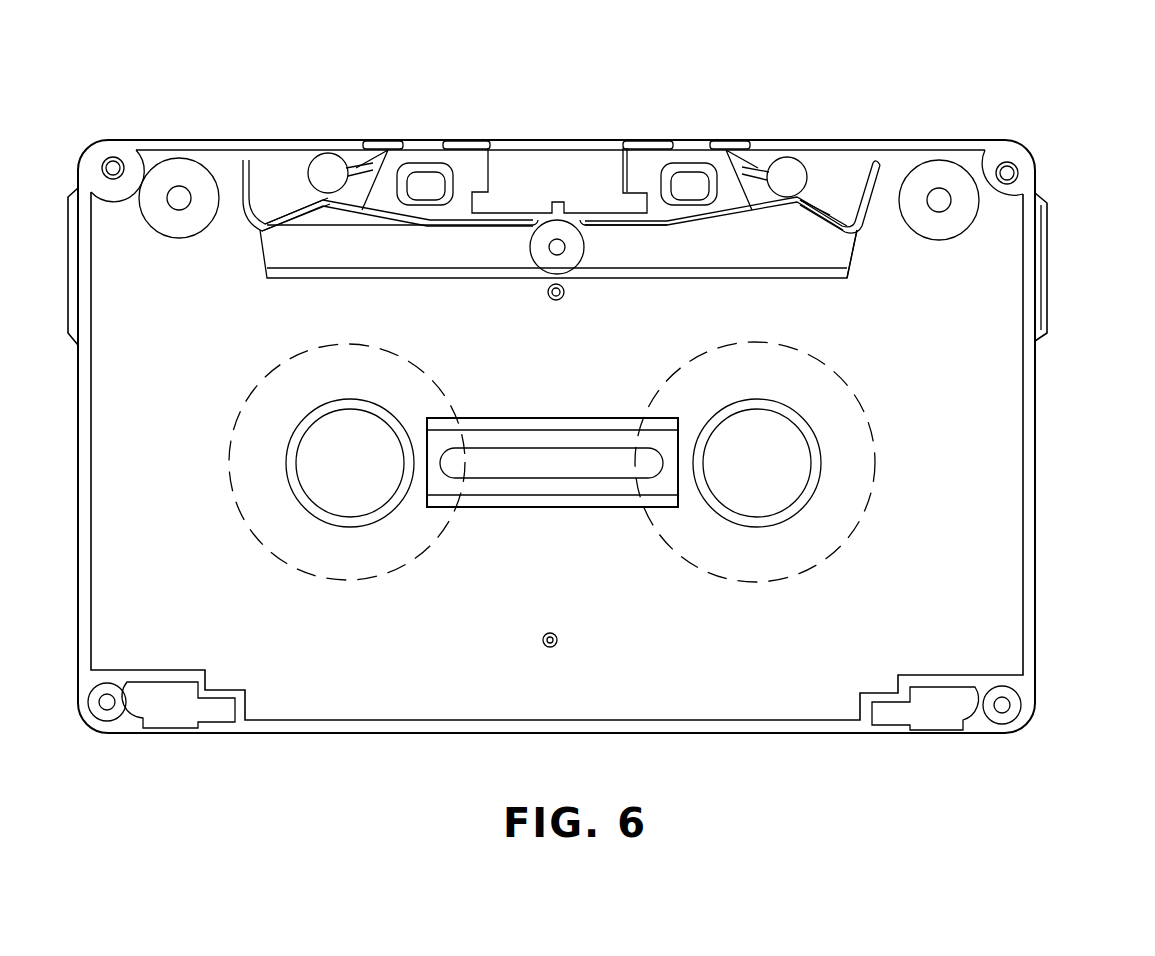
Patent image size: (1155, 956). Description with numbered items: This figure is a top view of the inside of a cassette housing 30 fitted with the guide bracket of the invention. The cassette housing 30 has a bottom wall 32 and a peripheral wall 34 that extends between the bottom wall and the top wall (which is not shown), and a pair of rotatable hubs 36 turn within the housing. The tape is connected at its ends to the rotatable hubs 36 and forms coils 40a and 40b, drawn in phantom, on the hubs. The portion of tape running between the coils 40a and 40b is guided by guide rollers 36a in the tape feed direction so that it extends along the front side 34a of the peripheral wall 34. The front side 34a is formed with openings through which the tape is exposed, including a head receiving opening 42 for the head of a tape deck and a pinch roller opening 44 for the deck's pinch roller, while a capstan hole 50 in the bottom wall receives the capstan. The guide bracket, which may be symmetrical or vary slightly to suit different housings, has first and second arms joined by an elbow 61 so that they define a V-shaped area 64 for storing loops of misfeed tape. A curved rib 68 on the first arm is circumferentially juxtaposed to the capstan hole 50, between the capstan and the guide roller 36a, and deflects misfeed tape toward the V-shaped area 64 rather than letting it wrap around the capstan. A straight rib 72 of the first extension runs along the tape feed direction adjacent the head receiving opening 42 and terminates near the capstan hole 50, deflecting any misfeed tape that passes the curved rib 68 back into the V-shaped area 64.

The cassette housing 30 is at (1040, 403).
The bottom wall 32 is at (890, 513).
The peripheral wall 34 is at (287, 735).
The front side of peripheral wall 34a is at (158, 140).
The rotatable hubs 36 is at (293, 433).
The guide rollers 36a is at (180, 197).
The coil of tape 40a is at (767, 557).
The coil of tape 40b is at (363, 557).
The head receiving opening 42 is at (687, 146).
The pinch roller opening 44 is at (773, 131).
The capstan hole 50 is at (328, 172).
The elbow 61 is at (863, 231).
The V-shaped area 64 is at (843, 188).
The curved rib 68 is at (820, 182).
The straight rib 72 is at (759, 158).